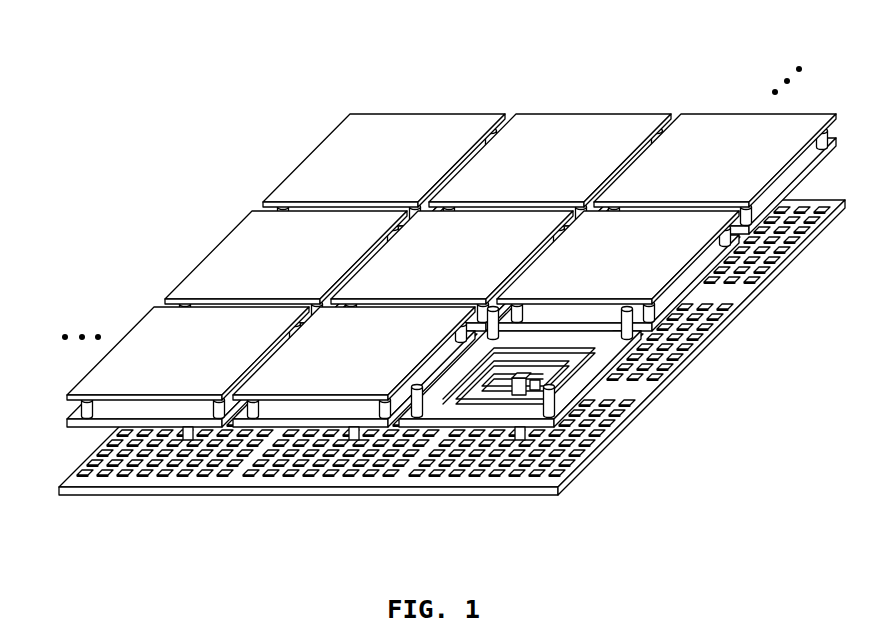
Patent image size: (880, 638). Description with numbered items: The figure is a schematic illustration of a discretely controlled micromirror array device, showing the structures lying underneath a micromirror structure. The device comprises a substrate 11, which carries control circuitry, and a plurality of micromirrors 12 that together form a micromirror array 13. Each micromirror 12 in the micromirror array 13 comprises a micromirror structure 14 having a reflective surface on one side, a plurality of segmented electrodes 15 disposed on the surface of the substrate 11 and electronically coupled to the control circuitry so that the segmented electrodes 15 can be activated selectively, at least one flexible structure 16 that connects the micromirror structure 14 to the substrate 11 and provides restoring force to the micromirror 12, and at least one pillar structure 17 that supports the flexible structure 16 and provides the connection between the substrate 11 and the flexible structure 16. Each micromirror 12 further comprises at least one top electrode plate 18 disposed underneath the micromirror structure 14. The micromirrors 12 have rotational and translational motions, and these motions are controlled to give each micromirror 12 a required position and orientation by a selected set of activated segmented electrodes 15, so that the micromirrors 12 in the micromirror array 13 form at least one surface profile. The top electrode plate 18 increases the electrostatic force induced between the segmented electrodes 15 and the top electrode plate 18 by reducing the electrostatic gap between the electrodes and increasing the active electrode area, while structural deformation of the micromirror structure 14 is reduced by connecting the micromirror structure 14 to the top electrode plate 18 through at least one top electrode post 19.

The substrate 11 is at (98, 489).
The micromirror 12 is at (452, 106).
The micromirror array 13 is at (451, 269).
The micromirror structure 14 is at (660, 267).
The segmented electrodes 15 is at (492, 475).
The flexible structure 16 is at (557, 360).
The pillar structure 17 is at (503, 430).
The top electrode plate 18 is at (613, 342).
The top electrode post 19 is at (553, 402).